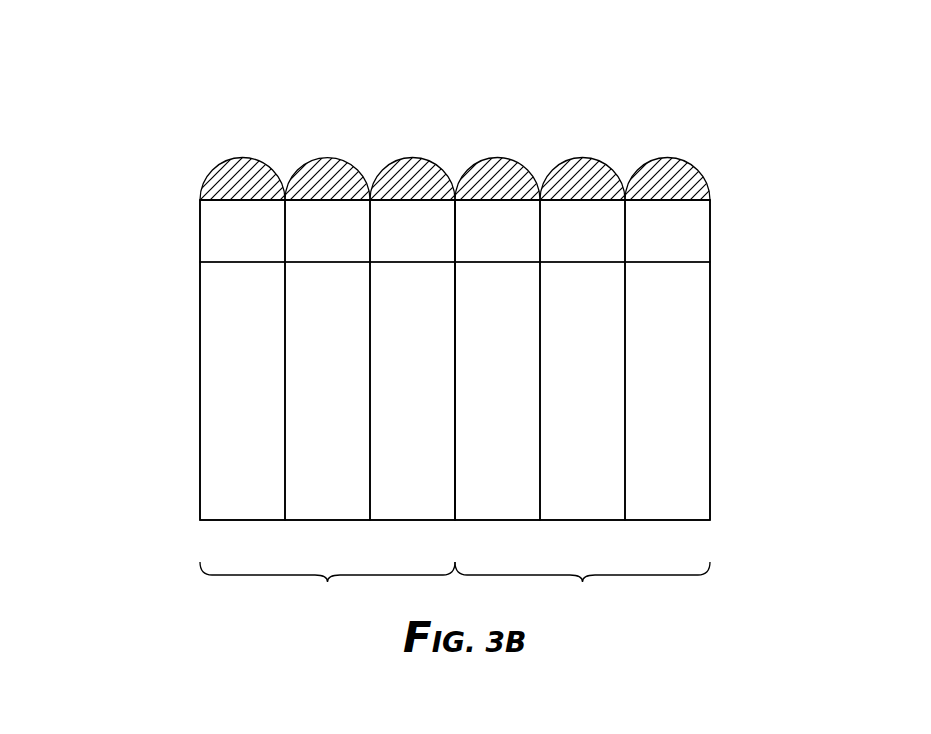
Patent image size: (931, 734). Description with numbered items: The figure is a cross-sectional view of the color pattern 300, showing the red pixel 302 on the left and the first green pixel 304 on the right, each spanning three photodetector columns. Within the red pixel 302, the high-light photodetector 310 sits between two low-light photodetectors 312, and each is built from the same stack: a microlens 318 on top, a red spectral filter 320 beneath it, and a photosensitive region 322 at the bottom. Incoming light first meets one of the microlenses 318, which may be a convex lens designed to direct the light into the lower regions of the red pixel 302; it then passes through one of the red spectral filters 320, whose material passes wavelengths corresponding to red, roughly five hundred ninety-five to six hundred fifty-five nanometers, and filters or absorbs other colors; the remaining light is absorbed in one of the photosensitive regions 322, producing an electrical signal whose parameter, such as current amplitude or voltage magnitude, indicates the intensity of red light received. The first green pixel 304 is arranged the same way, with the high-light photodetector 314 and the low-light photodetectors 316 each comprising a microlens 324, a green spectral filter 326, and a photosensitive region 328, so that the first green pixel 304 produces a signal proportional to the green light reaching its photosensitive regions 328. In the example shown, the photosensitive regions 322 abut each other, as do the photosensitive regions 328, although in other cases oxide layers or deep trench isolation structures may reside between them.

The color pattern 300 is at (123, 70).
The red pixel 302 is at (327, 406).
The first green pixel 304 is at (582, 406).
The high-light photodetector 310 is at (330, 110).
The low-light photodetector 312 is at (245, 110).
The high-light photodetector 314 is at (585, 110).
The low-light photodetector 316 is at (500, 110).
The microlens 318 is at (233, 159).
The red spectral filter 320 is at (217, 222).
The photosensitive region 322 is at (305, 333).
The microlens 324 is at (490, 159).
The green spectral filter 326 is at (697, 217).
The photosensitive region 328 is at (610, 355).